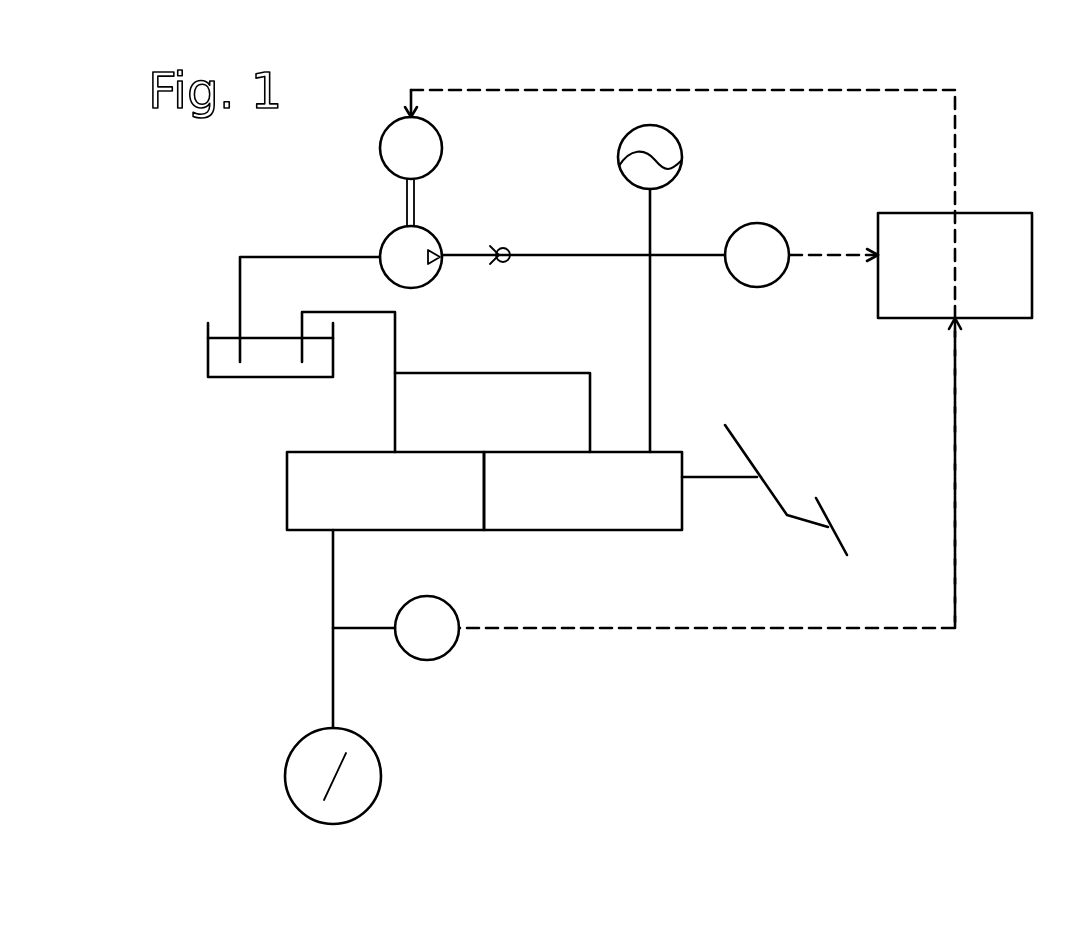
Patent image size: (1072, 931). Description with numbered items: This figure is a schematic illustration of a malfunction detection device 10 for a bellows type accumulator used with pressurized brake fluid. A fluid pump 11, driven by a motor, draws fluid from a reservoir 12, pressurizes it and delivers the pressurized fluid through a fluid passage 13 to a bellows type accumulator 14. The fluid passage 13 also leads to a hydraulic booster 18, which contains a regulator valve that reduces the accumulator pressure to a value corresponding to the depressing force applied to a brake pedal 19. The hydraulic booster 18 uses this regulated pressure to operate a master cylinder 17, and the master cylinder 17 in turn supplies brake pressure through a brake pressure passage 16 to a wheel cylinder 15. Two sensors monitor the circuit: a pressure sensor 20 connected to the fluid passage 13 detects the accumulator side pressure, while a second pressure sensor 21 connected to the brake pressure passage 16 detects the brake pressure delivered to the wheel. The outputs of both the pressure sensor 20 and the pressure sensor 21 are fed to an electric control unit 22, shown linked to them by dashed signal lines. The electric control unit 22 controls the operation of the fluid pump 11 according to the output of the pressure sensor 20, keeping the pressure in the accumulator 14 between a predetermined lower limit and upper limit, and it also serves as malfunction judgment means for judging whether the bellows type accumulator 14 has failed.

The brake control system 10 is at (975, 187).
The fluid pump 11 is at (387, 240).
The reservoir 12 is at (228, 377).
The fluid passage 13 is at (580, 255).
The bellows type accumulator 14 is at (618, 157).
The wheel cylinder 15 is at (381, 776).
The brake pressure passage 16 is at (333, 673).
The master cylinder 17 is at (295, 530).
The hydraulic booster 18 is at (682, 528).
The brake pedal 19 is at (752, 460).
The pressure sensor 20 is at (778, 228).
The pressure sensor 21 is at (452, 650).
The electric control unit 22 is at (1010, 318).